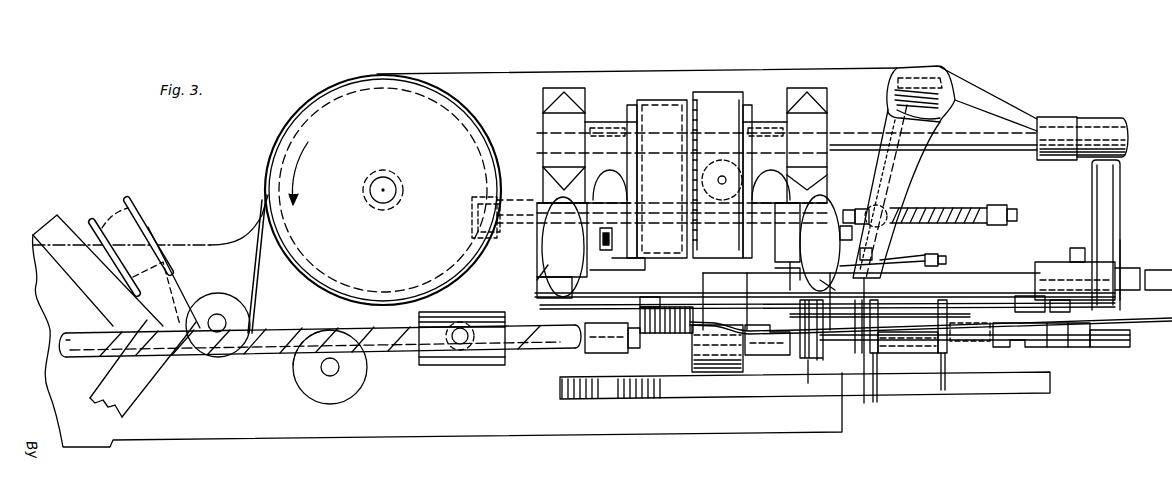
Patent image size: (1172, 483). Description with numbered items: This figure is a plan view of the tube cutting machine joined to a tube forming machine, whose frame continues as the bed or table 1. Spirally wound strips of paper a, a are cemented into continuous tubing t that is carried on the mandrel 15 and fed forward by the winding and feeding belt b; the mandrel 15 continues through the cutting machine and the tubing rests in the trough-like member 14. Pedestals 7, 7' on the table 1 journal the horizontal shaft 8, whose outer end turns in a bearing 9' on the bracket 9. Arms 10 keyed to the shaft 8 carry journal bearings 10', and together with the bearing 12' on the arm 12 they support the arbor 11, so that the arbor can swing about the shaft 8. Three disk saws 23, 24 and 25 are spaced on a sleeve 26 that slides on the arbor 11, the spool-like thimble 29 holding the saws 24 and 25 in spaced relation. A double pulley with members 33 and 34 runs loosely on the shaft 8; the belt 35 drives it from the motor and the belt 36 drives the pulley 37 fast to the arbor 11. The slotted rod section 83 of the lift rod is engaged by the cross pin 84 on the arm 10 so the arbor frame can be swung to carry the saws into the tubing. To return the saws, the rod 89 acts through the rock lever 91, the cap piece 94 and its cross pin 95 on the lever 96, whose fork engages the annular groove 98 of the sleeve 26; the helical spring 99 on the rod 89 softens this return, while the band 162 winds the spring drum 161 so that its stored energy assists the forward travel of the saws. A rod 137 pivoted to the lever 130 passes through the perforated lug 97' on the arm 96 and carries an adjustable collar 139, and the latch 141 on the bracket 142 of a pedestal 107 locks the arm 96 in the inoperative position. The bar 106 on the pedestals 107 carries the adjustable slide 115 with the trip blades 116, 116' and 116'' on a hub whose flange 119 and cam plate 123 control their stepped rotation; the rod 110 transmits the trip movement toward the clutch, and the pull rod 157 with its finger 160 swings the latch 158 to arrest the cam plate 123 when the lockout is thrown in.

The bed or table 1 is at (508, 73).
The strips of paper a is at (115, 313).
The winding and feeding belt b is at (257, 296).
The tubing t is at (540, 350).
The mandrel 15 is at (74, 334).
The trough-like member 14 is at (448, 366).
The pedestal 7 is at (570, 193).
The pedestal 7' is at (824, 175).
The rod 89 is at (518, 226).
The band or ribbon 162 is at (530, 196).
The belt 35 is at (672, 100).
The belt 36 is at (722, 92).
The pulley member 33 is at (632, 105).
The pulley member 34 is at (750, 105).
The spring drum 161 is at (730, 150).
The arm 10 is at (669, 174).
The cross pin 84 is at (582, 241).
The pedestal 107 is at (548, 262).
The slotted rod section 83 is at (597, 254).
The cap piece 94 is at (938, 72).
The cross pin 95 is at (962, 90).
The bracket 9 is at (996, 109).
The horizontal shaft 8 is at (978, 150).
The rock lever 91 is at (890, 192).
The lever 96 is at (898, 172).
The perforated lug 97' is at (887, 232).
The helical spring 99 is at (980, 200).
The bracket 142 is at (852, 226).
The latch 141 is at (842, 240).
The collar or abutment 139 is at (948, 260).
The rod 137 is at (915, 256).
The lever 130 is at (786, 268).
The bearing 9' is at (1082, 153).
The arm 12 is at (1121, 235).
The adjustable slide 115 is at (1121, 260).
The bar 106 is at (1012, 272).
The pull rod 157 is at (915, 292).
The swinging latch 158 is at (1015, 304).
The flange 119 is at (1062, 306).
The cam plate 123 is at (1062, 300).
The arbor 11 is at (972, 342).
The radial arm or blade 116'' is at (1020, 345).
The trip plate 116 is at (1081, 348).
The bearing 12' is at (1112, 351).
The radial arm or blade 116' is at (1072, 360).
The journal bearing 10' is at (687, 347).
The finger 160 is at (668, 336).
The pulley 37 is at (690, 382).
The sleeve 26 is at (822, 345).
The saw 23 is at (808, 385).
The spool-like thimble 29 is at (906, 354).
The rod 110 is at (915, 345).
The saw 24 is at (879, 388).
The saw 25 is at (944, 392).
The annular groove 98 is at (862, 405).